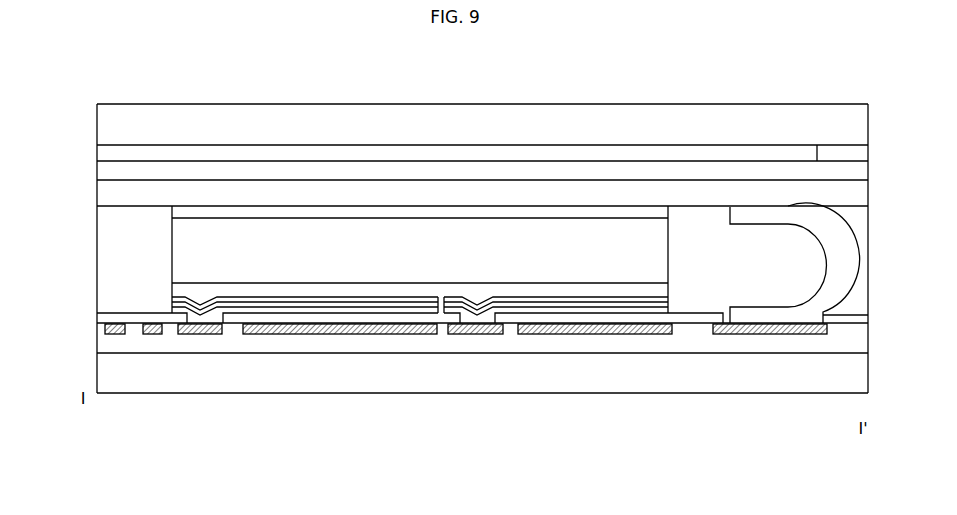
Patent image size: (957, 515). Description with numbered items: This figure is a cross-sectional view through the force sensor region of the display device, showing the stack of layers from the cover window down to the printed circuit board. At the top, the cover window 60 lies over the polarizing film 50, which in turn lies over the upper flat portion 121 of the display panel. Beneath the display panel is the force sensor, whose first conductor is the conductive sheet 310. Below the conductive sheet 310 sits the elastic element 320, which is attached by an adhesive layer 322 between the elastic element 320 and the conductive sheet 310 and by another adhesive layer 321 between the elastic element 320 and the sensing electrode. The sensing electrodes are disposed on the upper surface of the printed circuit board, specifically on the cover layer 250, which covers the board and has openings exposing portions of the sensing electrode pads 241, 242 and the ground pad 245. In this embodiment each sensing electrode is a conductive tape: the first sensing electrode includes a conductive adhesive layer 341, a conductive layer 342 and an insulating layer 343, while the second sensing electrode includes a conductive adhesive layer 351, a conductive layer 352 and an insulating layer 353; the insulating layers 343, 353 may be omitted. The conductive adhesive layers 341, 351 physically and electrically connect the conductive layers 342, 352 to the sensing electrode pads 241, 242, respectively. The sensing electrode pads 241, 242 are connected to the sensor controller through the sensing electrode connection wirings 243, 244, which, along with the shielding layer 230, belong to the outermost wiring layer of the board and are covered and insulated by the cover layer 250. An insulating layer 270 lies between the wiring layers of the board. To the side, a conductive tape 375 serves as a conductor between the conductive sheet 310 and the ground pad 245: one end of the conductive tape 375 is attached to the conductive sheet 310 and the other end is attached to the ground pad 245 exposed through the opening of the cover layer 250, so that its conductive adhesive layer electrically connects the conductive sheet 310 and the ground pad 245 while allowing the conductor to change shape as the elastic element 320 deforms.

The cover window 60 is at (112, 125).
The polarizing film 50 is at (108, 155).
The upper flat portion 121 is at (106, 173).
The conductive sheet 310 is at (110, 195).
The adhesive layer 321 is at (172, 219).
The elastic element 320 is at (173, 261).
The adhesive layer 322 is at (173, 295).
The shielding layer 230 is at (307, 340).
The sensing electrode pad 241 is at (208, 336).
The sensing electrode pad 242 is at (467, 336).
The sensing electrode connection wiring 243 is at (158, 336).
The sensing electrode connection wiring 244 is at (121, 336).
The ground pad 245 is at (738, 336).
The cover layer 250 is at (257, 340).
The insulating layer 270 is at (675, 342).
The adhesive layer 341 is at (340, 298).
The conductive layer 342 is at (380, 303).
The insulating layer 343 is at (420, 308).
The adhesive layer 351 is at (557, 298).
The conductive layer 352 is at (598, 303).
The insulating layer 353 is at (640, 308).
The conductive tape 375 is at (794, 320).